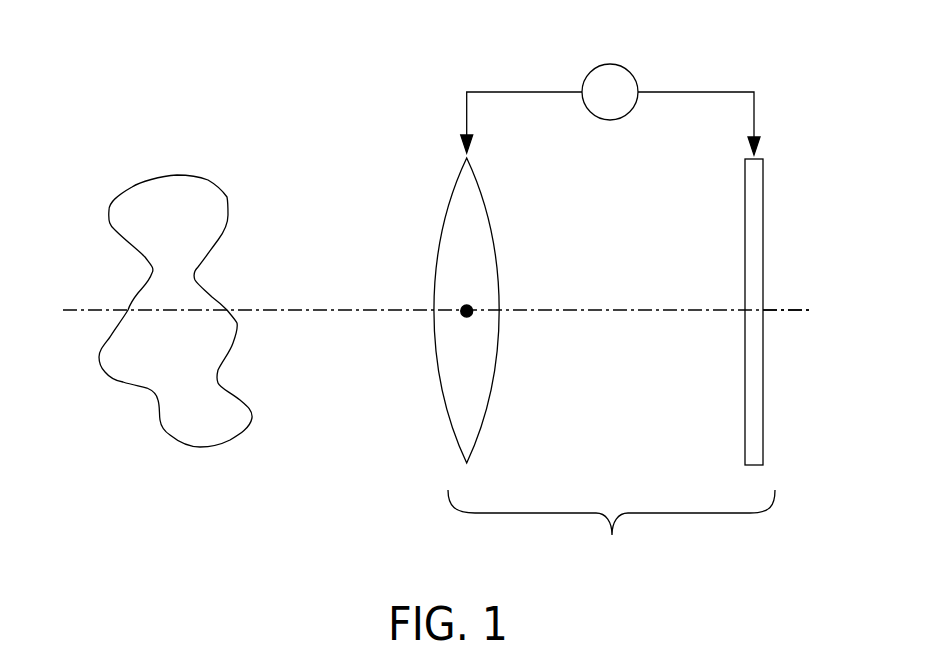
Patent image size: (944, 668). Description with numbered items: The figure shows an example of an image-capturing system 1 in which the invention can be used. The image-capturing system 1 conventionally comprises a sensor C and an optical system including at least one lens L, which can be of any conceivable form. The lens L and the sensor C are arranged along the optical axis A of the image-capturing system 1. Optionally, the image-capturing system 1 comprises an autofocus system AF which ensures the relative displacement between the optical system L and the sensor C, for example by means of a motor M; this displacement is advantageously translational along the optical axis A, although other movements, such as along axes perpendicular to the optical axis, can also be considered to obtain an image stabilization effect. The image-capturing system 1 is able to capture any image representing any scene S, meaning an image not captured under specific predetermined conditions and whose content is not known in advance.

The scene S is at (177, 175).
The lens L is at (477, 413).
The sensor C is at (757, 425).
The optical axis A is at (782, 308).
The autofocus system AF is at (693, 92).
The motor M is at (610, 92).
The image-capturing system 1 is at (611, 529).